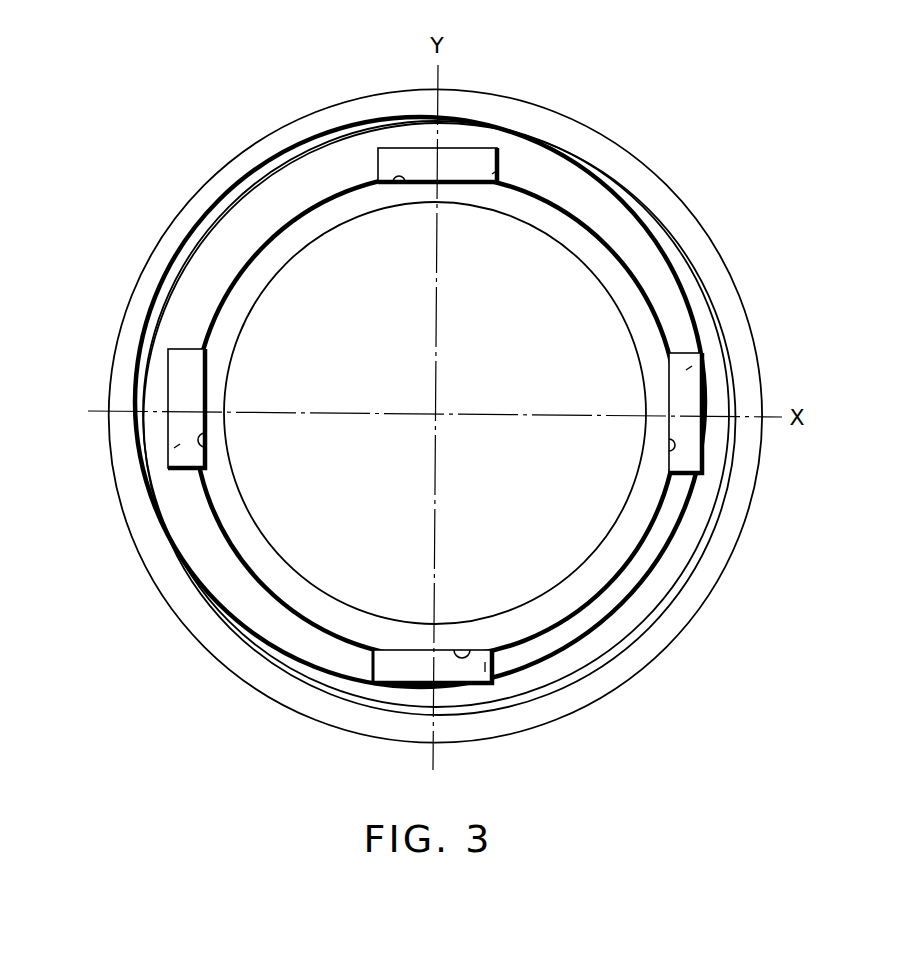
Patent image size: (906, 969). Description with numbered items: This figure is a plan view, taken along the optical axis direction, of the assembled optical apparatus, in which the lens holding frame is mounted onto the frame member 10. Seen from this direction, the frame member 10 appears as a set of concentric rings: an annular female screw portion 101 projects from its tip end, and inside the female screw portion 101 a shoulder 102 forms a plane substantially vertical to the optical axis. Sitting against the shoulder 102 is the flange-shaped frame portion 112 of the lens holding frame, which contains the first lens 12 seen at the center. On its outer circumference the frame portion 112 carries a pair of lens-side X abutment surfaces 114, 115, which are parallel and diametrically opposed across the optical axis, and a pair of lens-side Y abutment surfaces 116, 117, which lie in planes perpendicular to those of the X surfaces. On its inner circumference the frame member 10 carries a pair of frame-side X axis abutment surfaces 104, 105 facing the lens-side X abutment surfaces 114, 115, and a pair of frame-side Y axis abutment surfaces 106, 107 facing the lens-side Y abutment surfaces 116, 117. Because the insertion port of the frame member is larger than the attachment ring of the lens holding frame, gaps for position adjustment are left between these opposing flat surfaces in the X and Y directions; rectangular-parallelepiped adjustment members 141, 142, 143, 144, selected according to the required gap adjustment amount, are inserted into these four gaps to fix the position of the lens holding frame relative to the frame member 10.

The frame member 10 is at (398, 74).
The first lens 12 is at (368, 603).
The annular female screw portion 101 is at (271, 160).
The shoulder 102 is at (195, 530).
The frame-side X axis abutment surface 104 is at (170, 380).
The frame-side X axis abutment surface 105 is at (706, 398).
The frame-side Y axis abutment surface 106 is at (468, 150).
The frame-side Y axis abutment surface 107 is at (402, 685).
The frame portion 112 is at (240, 548).
The lens-side X abutment surface 114 is at (200, 441).
The lens-side X abutment surface 115 is at (668, 446).
The lens-side Y abutment surface 116 is at (403, 185).
The lens-side Y abutment surface 117 is at (471, 652).
The adjustment member 141 is at (180, 444).
The adjustment member 142 is at (692, 366).
The adjustment member 143 is at (498, 170).
The adjustment member 144 is at (485, 672).